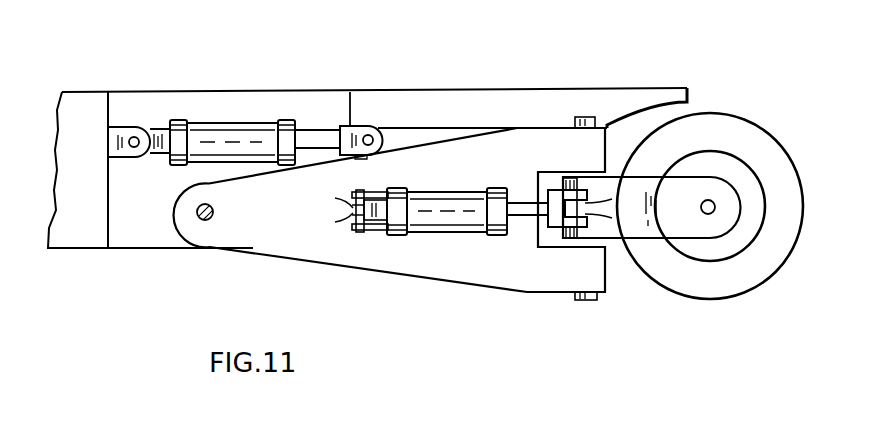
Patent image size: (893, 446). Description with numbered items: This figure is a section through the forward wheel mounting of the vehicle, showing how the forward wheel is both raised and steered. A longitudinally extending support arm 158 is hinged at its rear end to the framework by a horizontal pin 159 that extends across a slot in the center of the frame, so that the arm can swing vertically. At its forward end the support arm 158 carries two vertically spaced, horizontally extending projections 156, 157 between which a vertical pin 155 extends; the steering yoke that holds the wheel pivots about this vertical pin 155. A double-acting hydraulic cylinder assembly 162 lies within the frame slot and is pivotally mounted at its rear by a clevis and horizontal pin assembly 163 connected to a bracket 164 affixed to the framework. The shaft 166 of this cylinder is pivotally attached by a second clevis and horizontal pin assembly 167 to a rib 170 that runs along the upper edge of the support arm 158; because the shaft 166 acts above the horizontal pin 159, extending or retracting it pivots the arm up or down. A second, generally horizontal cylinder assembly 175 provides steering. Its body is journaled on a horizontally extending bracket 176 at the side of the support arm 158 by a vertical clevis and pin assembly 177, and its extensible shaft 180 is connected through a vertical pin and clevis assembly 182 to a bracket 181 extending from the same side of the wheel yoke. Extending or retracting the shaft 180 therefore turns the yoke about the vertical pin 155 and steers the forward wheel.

The vertical pin 155 is at (597, 120).
The horizontally extending projection 156 is at (546, 278).
The horizontally extending projection 157 is at (558, 143).
The support arm 158 is at (397, 247).
The horizontal pin 159 is at (206, 222).
The double-acting hydraulic cylinder assembly 162 is at (253, 137).
The clevis and horizontal pin assembly 163 is at (138, 139).
The bracket 164 is at (120, 130).
The shaft 166 is at (317, 140).
The clevis and horizontal pin assembly 167 is at (372, 136).
The rib 170 is at (415, 140).
The cylinder assembly 175 is at (458, 218).
The bracket 176 is at (347, 220).
The clevis and pin assembly 177 is at (362, 232).
The extensible shaft 180 is at (525, 214).
The bracket 181 is at (592, 212).
The vertical pin and clevis assembly 182 is at (587, 219).